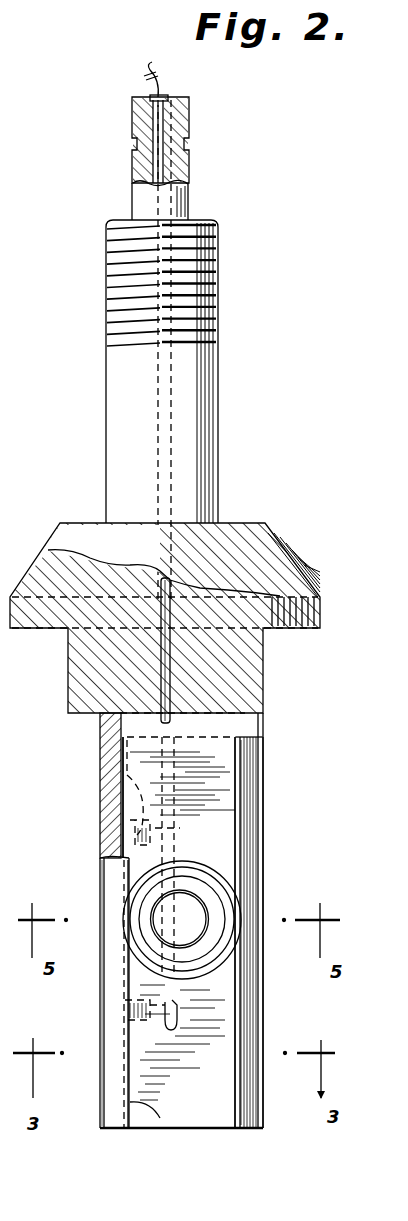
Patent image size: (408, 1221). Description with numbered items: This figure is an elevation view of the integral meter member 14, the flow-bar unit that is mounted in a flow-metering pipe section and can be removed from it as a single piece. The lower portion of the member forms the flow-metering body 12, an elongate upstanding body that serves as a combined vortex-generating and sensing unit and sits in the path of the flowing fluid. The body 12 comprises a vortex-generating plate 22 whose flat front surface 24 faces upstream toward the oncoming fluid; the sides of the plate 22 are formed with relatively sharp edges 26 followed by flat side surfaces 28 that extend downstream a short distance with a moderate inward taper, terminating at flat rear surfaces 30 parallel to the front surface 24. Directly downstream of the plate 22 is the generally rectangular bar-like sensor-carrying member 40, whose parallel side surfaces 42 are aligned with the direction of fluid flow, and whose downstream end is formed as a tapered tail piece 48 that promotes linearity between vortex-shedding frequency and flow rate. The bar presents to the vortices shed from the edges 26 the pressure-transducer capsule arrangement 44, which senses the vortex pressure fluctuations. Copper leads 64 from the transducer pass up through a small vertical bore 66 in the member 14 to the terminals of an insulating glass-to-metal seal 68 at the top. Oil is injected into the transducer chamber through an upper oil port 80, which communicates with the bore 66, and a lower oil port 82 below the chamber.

The body 12 is at (272, 786).
The integral meter member 14 is at (70, 432).
The vortex-generating plate 22 is at (105, 800).
The front surface 24 is at (100, 886).
The edges 26 is at (100, 966).
The side surfaces 28 is at (115, 1073).
The rear surfaces 30 is at (132, 1102).
The sensor-carrying member 40 is at (272, 866).
The side surfaces 42 is at (207, 1110).
The pressure-transducer capsule arrangement 44 is at (206, 853).
The tail piece 48 is at (247, 1010).
The copper leads 64 is at (160, 73).
The vertical bore 66 is at (171, 457).
The glass-to-metal seal 68 is at (150, 93).
The oil port 80 is at (122, 766).
The oil port 82 is at (140, 1030).